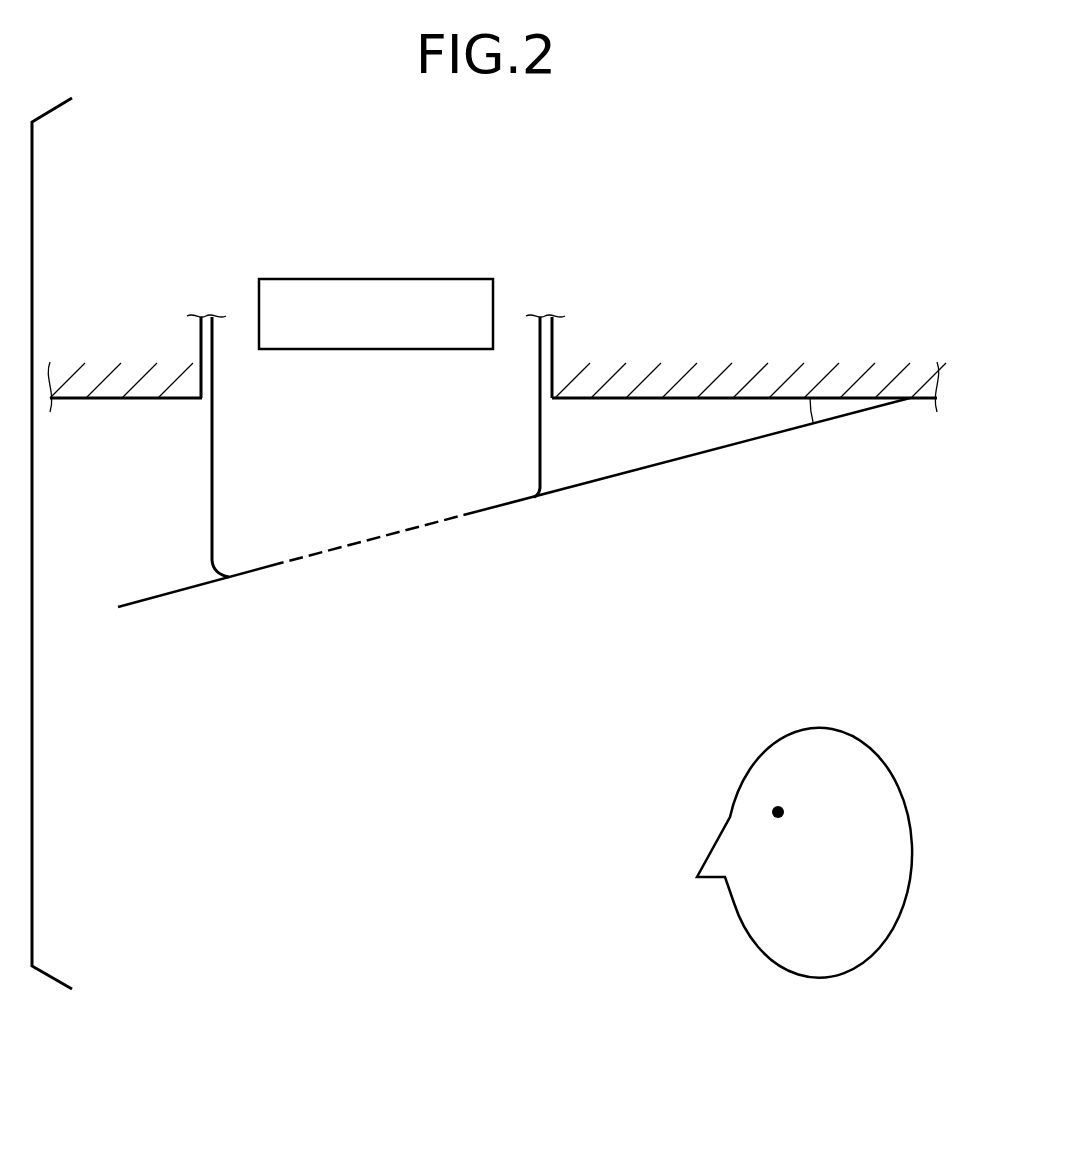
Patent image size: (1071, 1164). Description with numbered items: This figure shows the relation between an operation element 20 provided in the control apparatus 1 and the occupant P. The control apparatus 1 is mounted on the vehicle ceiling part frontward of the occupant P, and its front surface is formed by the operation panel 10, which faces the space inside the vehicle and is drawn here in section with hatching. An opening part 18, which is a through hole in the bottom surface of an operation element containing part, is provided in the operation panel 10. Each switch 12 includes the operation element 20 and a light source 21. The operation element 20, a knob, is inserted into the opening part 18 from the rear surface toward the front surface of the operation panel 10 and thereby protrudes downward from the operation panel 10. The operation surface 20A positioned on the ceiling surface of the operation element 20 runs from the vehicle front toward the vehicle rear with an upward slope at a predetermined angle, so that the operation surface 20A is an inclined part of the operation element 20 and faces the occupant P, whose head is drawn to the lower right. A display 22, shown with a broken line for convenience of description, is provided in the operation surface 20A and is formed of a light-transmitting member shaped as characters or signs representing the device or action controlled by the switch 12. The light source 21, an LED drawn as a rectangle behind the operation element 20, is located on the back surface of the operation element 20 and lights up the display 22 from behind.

The control apparatus 1 is at (815, 198).
The operation panel 10 is at (643, 398).
The switch 12 is at (545, 255).
The opening part 18 is at (202, 375).
The operation element 20 is at (212, 513).
The operation surface 20A is at (510, 507).
The light source 21 is at (463, 279).
The display 22 is at (327, 553).
The occupant P is at (870, 742).